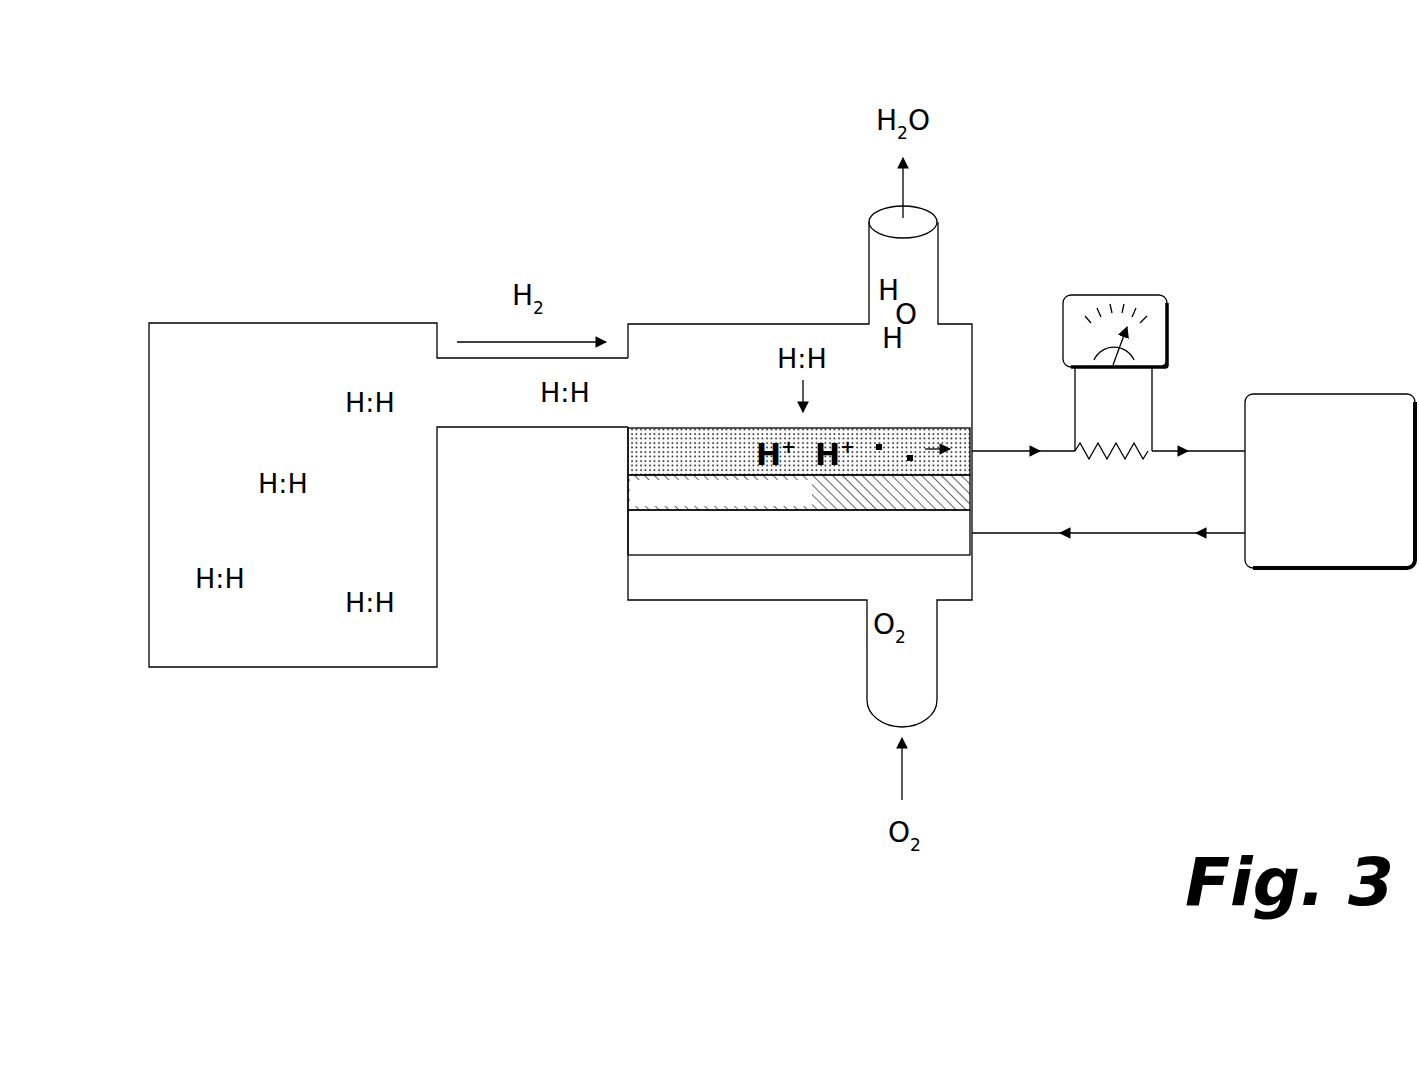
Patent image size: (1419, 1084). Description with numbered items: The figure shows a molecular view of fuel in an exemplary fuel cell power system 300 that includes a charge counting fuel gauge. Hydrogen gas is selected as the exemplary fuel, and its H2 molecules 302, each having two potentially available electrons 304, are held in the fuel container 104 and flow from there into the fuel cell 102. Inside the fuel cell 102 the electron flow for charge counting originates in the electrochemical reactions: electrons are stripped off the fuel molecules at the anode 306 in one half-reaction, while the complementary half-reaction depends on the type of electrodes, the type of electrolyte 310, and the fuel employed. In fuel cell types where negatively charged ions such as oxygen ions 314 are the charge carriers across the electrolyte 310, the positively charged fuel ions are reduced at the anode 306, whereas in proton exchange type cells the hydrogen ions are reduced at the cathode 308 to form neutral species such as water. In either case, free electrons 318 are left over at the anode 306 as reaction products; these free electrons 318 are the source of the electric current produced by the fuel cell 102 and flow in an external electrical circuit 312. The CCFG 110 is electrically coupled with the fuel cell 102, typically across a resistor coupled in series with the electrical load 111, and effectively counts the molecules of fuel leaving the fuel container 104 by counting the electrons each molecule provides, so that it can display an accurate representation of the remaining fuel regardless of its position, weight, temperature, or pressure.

The fuel cell power system 300 is at (633, 137).
The hydrogen molecules 302 is at (180, 348).
The electrons 304 is at (230, 350).
The fuel container 104 is at (270, 692).
The fuel cell 102 is at (740, 698).
The anode 306 is at (799, 451).
The cathode 308 is at (799, 532).
The electrolyte 310 is at (799, 492).
The external electrical circuit 312 is at (1108, 533).
The oxygen ions 314 is at (890, 528).
The free electrons 318 is at (910, 456).
The charge counting fuel gauge 110 is at (1113, 295).
The electrical load 111 is at (1330, 481).